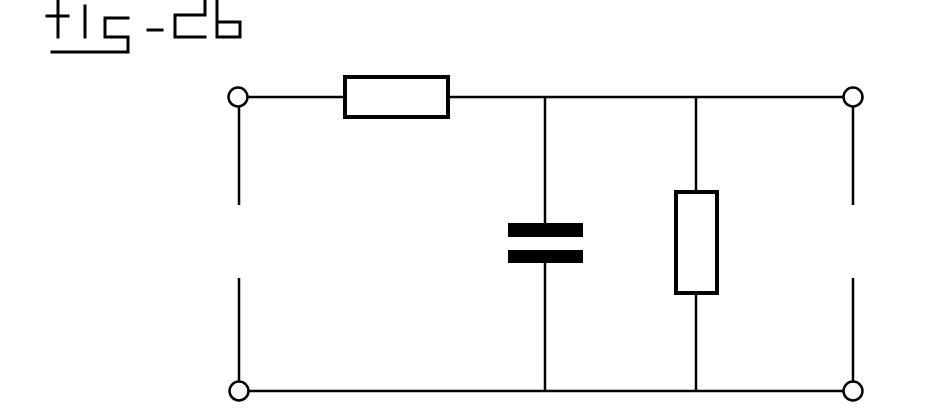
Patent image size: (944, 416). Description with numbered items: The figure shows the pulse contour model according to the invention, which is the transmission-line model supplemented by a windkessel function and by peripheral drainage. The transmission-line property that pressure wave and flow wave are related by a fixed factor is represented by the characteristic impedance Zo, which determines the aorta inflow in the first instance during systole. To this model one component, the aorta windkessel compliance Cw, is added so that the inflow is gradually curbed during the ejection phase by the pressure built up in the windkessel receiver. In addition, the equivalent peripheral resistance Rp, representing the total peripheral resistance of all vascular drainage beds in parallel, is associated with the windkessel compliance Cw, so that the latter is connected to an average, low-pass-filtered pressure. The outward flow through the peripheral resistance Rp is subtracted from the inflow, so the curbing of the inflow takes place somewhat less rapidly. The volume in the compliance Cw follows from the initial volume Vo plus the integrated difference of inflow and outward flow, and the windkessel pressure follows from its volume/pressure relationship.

The characteristic impedance Zo is at (396, 81).
The aorta windkessel compliance Cw is at (559, 225).
The equivalent peripheral resistance Rp is at (718, 242).
The initial volume Vo is at (494, 297).